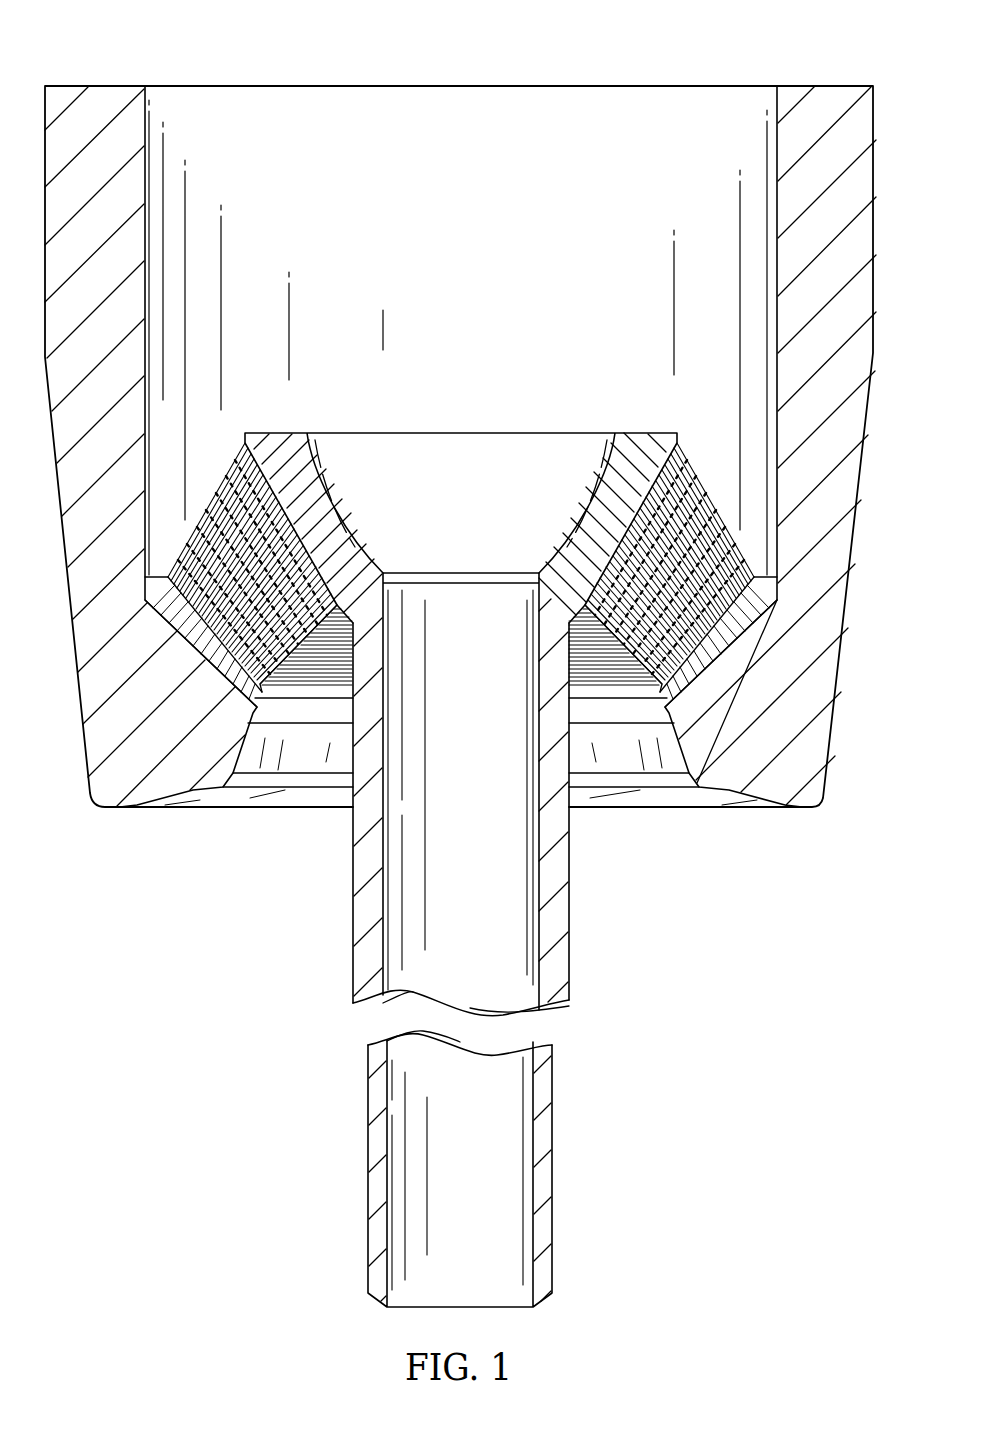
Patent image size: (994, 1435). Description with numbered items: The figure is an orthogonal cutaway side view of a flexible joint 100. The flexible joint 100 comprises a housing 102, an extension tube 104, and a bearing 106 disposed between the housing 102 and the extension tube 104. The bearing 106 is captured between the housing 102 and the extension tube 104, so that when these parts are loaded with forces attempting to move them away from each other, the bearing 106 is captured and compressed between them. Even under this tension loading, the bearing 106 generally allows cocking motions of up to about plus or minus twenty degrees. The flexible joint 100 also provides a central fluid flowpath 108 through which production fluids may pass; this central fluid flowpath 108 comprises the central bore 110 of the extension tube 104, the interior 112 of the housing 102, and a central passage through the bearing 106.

The flexible joint 100 is at (570, 62).
The housing 102 is at (842, 673).
The extension tube 104 is at (552, 1170).
The bearing 106 is at (200, 497).
The central fluid flowpath 108 is at (488, 450).
The central bore 110 is at (480, 933).
The interior 112 is at (482, 258).